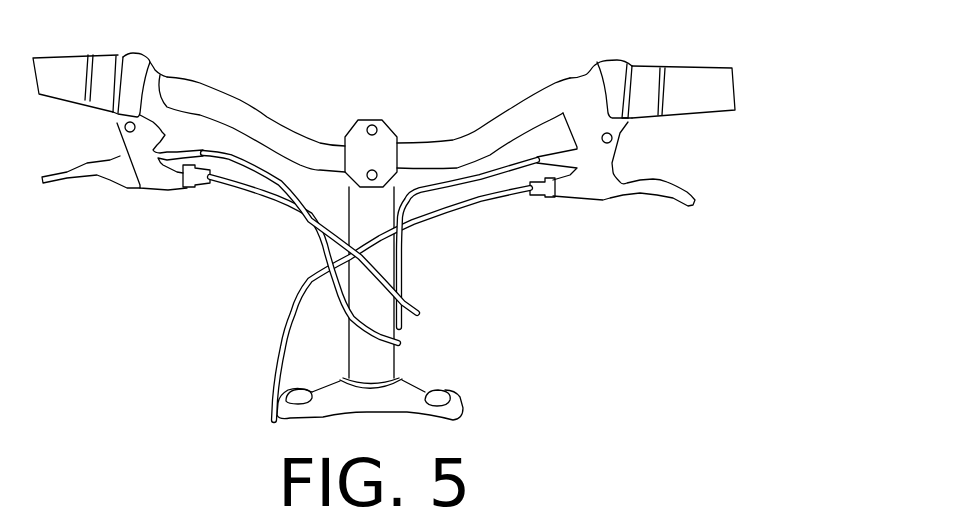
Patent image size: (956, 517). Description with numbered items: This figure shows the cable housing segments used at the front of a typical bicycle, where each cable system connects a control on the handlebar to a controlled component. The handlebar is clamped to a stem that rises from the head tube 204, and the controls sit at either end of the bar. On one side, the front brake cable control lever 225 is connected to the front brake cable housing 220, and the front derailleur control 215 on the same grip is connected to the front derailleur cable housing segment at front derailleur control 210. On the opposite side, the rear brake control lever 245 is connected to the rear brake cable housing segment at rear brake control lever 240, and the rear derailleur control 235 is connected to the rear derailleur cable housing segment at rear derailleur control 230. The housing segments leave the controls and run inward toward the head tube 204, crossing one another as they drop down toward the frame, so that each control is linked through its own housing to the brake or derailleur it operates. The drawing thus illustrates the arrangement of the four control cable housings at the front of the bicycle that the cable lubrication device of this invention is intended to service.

The head tube 204 is at (397, 353).
The front derailleur cable housing segment at front derailleur control 210 is at (490, 166).
The front derailleur control 215 is at (645, 65).
The front brake cable housing 220 is at (488, 205).
The front brake cable control lever 225 is at (652, 192).
The rear derailleur cable housing segment at rear derailleur control 230 is at (223, 150).
The rear derailleur control 235 is at (108, 56).
The rear brake cable housing segment at rear brake control lever 240 is at (250, 190).
The rear brake control lever 245 is at (107, 187).